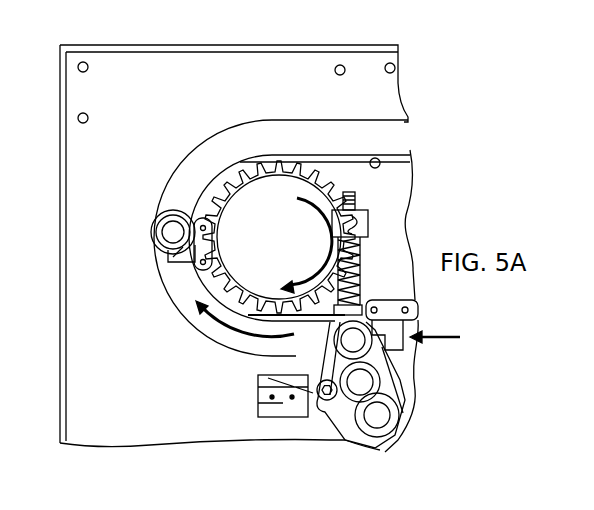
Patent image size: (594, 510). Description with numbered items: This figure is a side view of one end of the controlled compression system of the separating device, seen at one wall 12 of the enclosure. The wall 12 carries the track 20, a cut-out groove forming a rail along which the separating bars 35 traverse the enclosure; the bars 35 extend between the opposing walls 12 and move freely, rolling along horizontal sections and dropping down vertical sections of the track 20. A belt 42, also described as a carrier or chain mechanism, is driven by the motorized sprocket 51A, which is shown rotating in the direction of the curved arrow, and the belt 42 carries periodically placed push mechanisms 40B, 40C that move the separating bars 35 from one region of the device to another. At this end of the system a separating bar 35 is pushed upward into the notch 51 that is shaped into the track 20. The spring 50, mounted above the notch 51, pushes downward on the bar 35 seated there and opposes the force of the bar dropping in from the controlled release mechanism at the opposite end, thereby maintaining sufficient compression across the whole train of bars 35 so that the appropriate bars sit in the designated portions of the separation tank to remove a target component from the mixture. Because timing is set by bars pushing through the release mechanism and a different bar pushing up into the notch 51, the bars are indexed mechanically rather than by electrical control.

The wall 12 is at (161, 96).
The track 20 is at (395, 132).
The separating bar 35 is at (162, 222).
The push mechanism 40B is at (172, 308).
The push mechanism 40C is at (418, 321).
The belt 42 is at (410, 160).
The spring 50 is at (362, 265).
The notch 51 is at (414, 300).
The motorized sprocket 51A is at (291, 241).